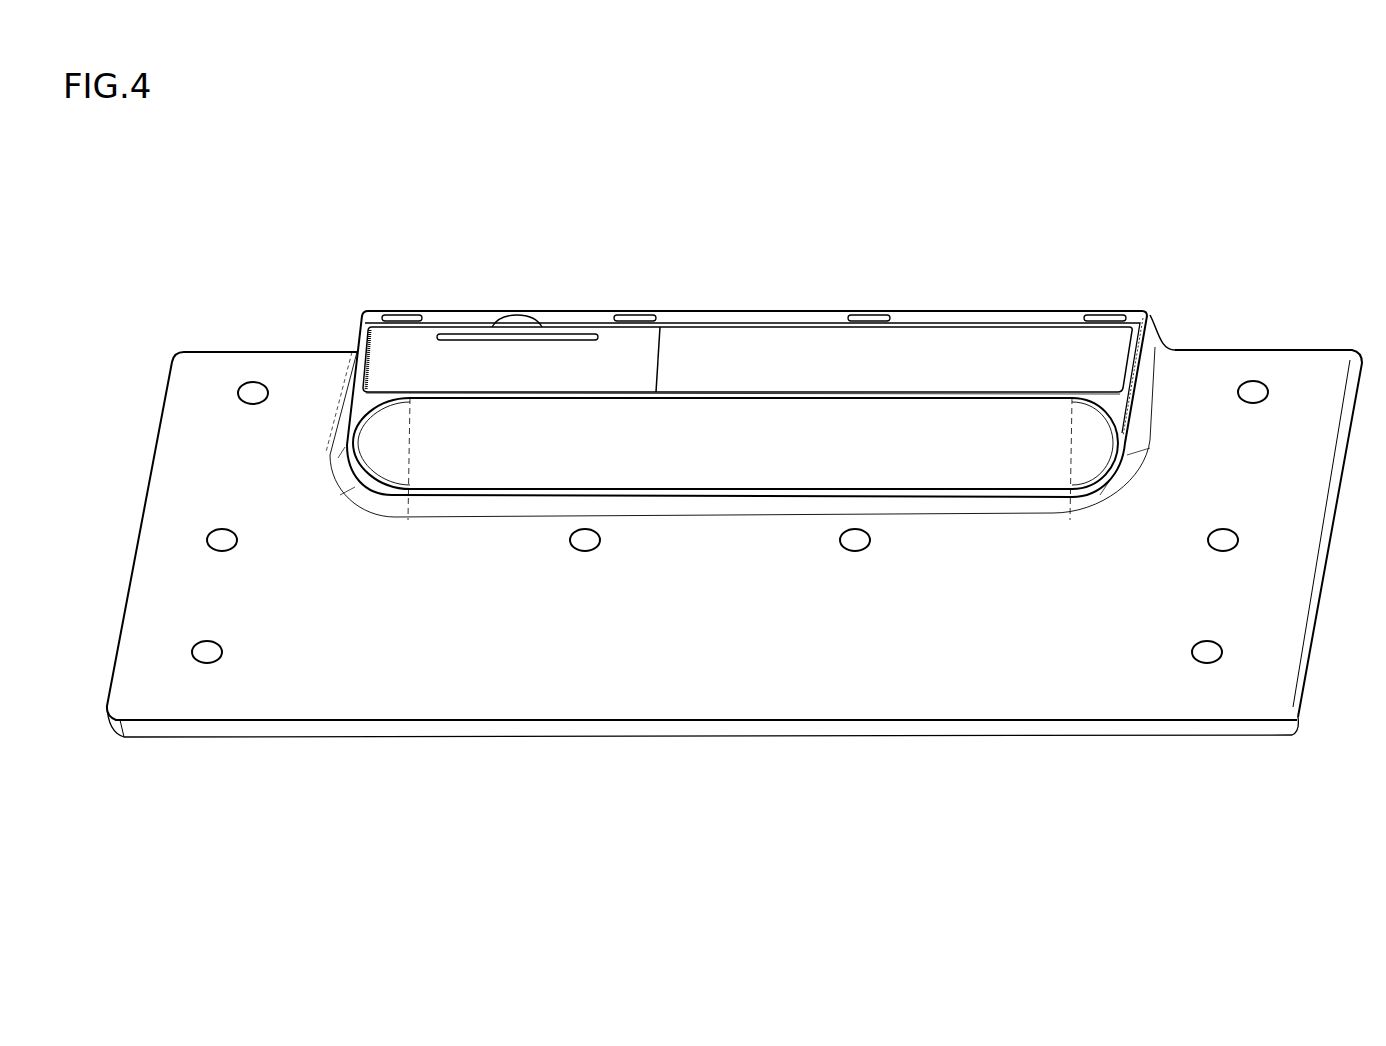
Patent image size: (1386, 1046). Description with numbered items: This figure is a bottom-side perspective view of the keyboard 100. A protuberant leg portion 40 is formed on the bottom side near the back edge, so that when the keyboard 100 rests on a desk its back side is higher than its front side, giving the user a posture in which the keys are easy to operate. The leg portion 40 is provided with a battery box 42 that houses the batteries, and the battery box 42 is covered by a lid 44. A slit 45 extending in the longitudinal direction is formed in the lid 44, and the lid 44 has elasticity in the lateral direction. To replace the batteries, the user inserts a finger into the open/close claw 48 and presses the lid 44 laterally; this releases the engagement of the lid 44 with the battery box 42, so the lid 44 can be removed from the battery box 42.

The keyboard 100 is at (758, 828).
The leg portion 40 is at (1150, 336).
The battery box 42 is at (426, 352).
The lid 44 is at (612, 348).
The slit 45 is at (466, 337).
The open/close claw 48 is at (521, 325).